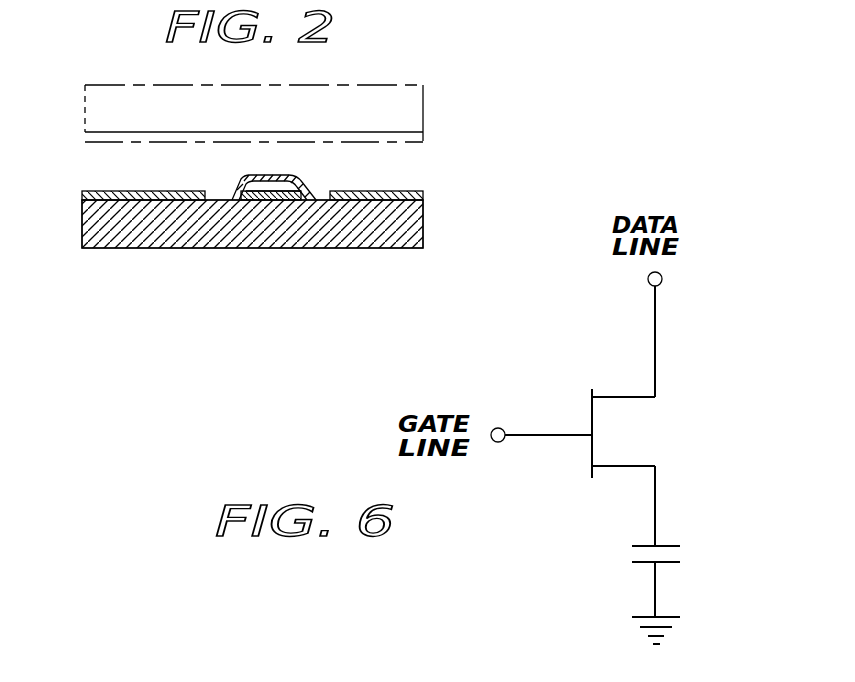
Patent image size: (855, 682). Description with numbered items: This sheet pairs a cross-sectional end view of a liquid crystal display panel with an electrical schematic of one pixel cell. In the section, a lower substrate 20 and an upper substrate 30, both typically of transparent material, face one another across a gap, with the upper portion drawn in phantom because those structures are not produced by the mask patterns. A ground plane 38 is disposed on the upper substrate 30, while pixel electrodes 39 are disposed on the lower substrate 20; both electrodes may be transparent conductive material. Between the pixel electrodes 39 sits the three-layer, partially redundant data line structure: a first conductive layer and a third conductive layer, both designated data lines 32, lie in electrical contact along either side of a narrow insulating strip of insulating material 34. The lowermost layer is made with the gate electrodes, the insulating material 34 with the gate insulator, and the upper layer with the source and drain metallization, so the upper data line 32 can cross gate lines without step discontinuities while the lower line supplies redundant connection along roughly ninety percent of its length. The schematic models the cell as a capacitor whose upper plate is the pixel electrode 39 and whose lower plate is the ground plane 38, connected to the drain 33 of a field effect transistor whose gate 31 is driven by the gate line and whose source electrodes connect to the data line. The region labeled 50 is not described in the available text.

In FIG. 2, the substrate 20 is at (167, 236).
In FIG. 2, the substrate 30 is at (167, 122).
In FIG. 2, the data line 32 is at (284, 178).
In FIG. 6, the data line 32 is at (656, 338).
In FIG. 2, the insulating material 34 is at (306, 188).
In FIG. 2, the ground plane 38 is at (85, 141).
In FIG. 6, the ground plane 38 is at (668, 563).
In FIG. 2, the pixel electrode 39 is at (85, 197).
In FIG. 6, the pixel electrode 39 is at (670, 543).
In FIG. 2, the liquid crystal gap 50 is at (167, 176).
In FIG. 6, the gate 31 is at (539, 438).
In FIG. 6, the drain 33 is at (617, 468).